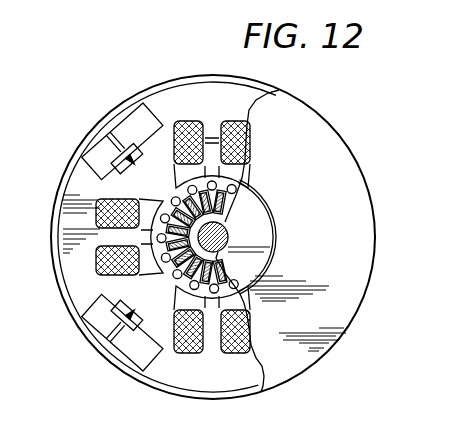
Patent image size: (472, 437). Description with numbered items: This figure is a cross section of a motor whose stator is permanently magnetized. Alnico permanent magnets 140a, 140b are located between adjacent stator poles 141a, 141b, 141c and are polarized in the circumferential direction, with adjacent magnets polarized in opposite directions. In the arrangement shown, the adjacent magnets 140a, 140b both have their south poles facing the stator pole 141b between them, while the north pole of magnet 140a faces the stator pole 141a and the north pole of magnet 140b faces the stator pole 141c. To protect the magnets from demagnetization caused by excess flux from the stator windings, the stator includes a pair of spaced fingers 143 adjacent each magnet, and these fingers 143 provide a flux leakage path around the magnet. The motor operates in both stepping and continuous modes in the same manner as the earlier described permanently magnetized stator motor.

The permanent magnet 140a is at (100, 130).
The permanent magnet 140b is at (110, 350).
The stator pole 141a is at (212, 128).
The stator pole 141b is at (107, 239).
The stator pole 141c is at (207, 351).
The spaced fingers 143 is at (137, 172).